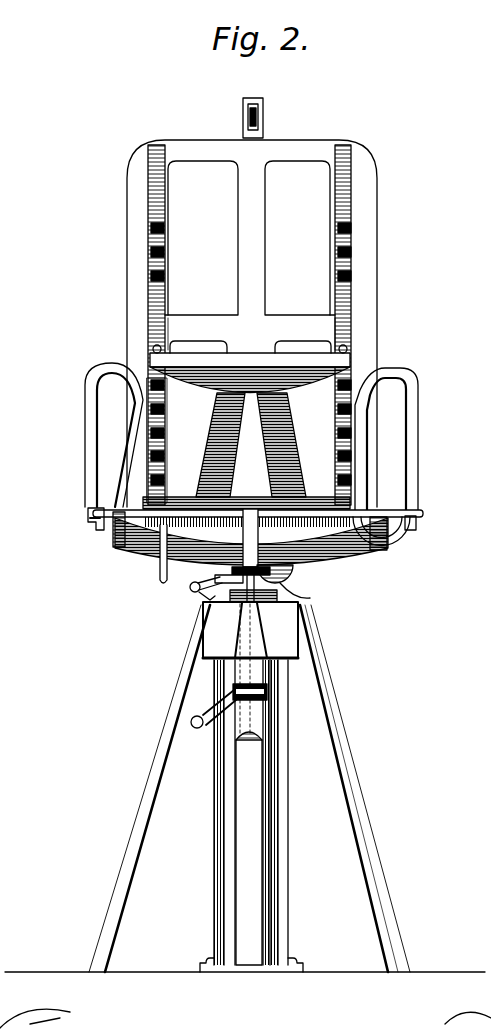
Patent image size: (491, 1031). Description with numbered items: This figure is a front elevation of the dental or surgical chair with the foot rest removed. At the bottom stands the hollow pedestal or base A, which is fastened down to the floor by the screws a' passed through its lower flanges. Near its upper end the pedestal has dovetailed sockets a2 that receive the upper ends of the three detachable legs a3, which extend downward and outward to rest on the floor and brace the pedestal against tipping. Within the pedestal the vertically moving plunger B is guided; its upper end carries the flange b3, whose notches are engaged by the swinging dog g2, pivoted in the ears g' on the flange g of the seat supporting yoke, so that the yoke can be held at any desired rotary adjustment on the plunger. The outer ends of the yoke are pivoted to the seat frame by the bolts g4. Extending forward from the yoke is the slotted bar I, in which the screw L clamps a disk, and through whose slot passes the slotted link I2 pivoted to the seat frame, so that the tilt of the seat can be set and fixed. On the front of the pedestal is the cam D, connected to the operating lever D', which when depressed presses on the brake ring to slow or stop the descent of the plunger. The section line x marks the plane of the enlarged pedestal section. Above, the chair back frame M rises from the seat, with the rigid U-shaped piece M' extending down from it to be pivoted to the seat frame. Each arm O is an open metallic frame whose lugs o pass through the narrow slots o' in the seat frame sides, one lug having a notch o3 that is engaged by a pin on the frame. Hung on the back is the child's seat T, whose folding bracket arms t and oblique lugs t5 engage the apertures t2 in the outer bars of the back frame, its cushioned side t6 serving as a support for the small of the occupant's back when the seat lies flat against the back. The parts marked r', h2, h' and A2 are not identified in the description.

The knob r' is at (265, 118).
The folding bracket arms t is at (148, 296).
The apertures t2 is at (164, 228).
The obliquely placed lugs t5 is at (342, 368).
The child's seat T is at (252, 362).
The cushioned or upholstered side t6 is at (248, 395).
The chair back frame M is at (170, 440).
The arm O is at (85, 450).
The tenons or lugs o is at (251, 533).
The notch o3 is at (88, 520).
The narrow slots o' is at (422, 527).
The arc bracket h2 is at (400, 535).
The spring end block h' is at (389, 550).
The screws a' is at (251, 533).
The bolts g4 is at (120, 545).
The forwardly extending bar I is at (250, 508).
The screw L is at (190, 565).
The ears g' is at (204, 578).
The swinging dog g2 is at (200, 602).
The U-shaped piece M' is at (307, 580).
The flange g is at (301, 595).
The plunger B is at (300, 640).
The flange b3 is at (268, 615).
The pedestal or base A is at (288, 878).
The sockets a2 is at (235, 648).
The hub wall A2 is at (200, 610).
The slotted link I2 is at (245, 603).
The section line x is at (250, 700).
The operating lever D' is at (183, 709).
The cam D is at (226, 840).
The detachable legs a3 is at (355, 775).